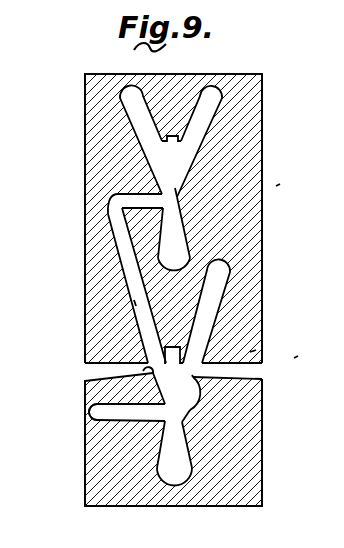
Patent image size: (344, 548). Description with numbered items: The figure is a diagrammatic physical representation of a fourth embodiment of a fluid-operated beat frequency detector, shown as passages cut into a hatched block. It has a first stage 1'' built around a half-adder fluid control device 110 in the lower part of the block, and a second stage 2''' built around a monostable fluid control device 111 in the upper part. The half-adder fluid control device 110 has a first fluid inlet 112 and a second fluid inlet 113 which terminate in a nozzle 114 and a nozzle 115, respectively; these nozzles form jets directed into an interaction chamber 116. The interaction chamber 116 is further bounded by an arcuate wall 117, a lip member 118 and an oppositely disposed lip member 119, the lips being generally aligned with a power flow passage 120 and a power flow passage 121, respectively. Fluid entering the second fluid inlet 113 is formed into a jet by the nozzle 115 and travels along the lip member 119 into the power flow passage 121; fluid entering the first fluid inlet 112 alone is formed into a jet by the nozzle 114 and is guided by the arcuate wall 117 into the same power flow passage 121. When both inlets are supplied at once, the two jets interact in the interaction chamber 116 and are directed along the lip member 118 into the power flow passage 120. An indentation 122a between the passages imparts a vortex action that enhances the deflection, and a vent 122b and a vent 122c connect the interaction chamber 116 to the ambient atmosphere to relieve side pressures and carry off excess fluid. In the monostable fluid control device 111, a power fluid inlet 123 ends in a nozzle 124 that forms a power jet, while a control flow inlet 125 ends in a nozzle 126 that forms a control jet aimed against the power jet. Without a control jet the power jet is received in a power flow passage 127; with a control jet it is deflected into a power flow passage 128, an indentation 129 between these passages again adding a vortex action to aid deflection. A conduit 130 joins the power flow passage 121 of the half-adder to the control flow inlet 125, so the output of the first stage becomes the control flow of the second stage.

The monostable fluid control device 111 is at (243, 104).
The half-adder fluid control device 110 is at (253, 352).
The first fluid inlet 112 is at (92, 410).
The second fluid inlet 113 is at (174, 476).
The nozzle 114 is at (163, 412).
The nozzle 115 is at (172, 421).
The interaction chamber 116 is at (186, 401).
The arcuate wall 117 is at (197, 400).
The lip member 118 is at (194, 377).
The lip member 119 is at (150, 370).
The power flow passage 120 is at (218, 298).
The power flow passage 121 is at (140, 310).
The indentation 122a is at (174, 346).
The vent 122b is at (91, 372).
The vent 122c is at (255, 372).
The power fluid inlet 123 is at (174, 262).
The nozzle 124 is at (171, 210).
The control flow inlet 125 is at (118, 208).
The nozzle 126 is at (159, 201).
The power flow passage 127 is at (130, 89).
The power flow passage 128 is at (208, 88).
The indentation 129 is at (172, 147).
The conduit 130 is at (136, 268).
The second stage 2''' is at (297, 177).
The first stage 1'' is at (315, 348).